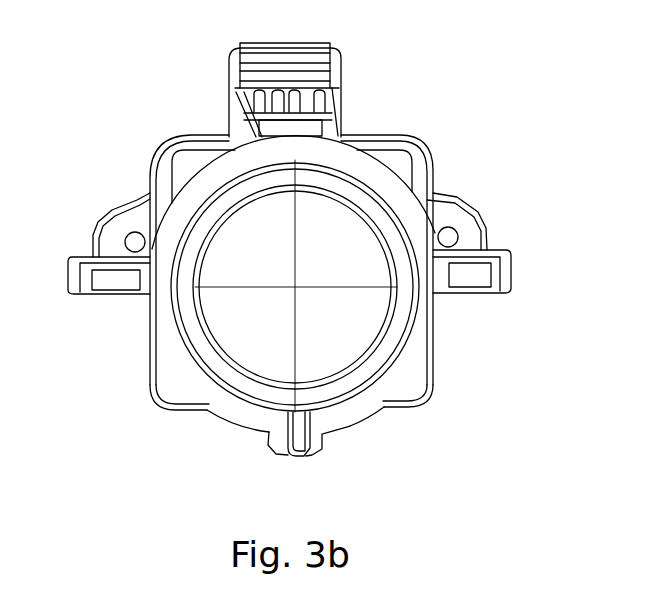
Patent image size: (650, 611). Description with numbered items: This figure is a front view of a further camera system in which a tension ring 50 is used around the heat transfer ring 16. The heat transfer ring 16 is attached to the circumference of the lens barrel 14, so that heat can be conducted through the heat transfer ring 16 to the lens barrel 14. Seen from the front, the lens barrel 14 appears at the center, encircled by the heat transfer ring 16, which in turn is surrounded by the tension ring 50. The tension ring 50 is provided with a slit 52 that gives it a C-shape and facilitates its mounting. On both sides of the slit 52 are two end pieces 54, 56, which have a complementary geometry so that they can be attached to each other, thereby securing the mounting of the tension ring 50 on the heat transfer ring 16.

The lens barrel 14 is at (214, 314).
The heat transfer ring 16 is at (400, 297).
The tension ring 50 is at (353, 130).
The slit 52 is at (281, 458).
The end piece 54 is at (326, 451).
The end piece 56 is at (263, 447).